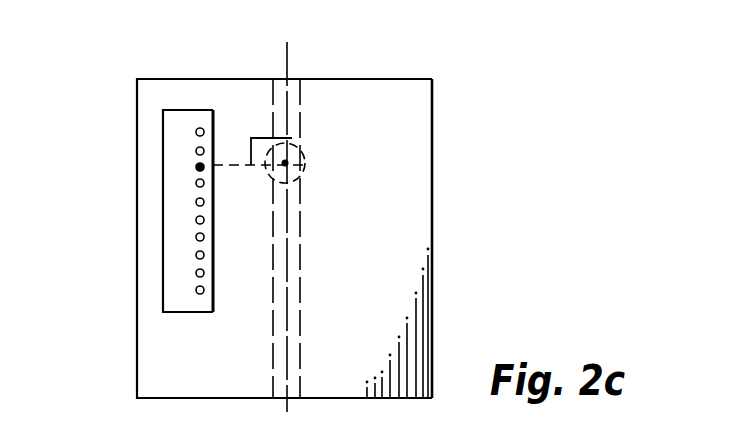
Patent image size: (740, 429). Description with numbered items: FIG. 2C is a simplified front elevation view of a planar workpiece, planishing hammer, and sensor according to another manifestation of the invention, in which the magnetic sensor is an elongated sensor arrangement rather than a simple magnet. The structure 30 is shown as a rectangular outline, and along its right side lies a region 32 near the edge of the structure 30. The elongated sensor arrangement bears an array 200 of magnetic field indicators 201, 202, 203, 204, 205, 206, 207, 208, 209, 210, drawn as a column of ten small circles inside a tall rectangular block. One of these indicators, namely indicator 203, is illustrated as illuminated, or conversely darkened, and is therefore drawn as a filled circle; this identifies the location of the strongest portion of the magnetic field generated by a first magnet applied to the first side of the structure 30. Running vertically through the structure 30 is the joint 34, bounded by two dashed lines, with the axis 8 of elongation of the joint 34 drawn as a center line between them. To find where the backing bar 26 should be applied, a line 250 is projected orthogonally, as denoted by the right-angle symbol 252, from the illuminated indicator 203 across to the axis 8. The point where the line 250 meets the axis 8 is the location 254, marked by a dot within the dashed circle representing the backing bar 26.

The axis of elongation 8 is at (289, 56).
The backing bar 26 is at (305, 163).
The structure 30 is at (434, 136).
The surface 32 is at (417, 181).
The joint 34 is at (301, 111).
The array of magnetic field indicators 200 is at (183, 320).
The magnetic field indicator 201 is at (196, 132).
The magnetic field indicator 202 is at (196, 151).
The magnetic field indicator 203 is at (197, 167).
The magnetic field indicator 204 is at (196, 184).
The magnetic field indicator 205 is at (204, 202).
The magnetic field indicator 206 is at (196, 221).
The magnetic field indicator 207 is at (204, 237).
The magnetic field indicator 208 is at (196, 256).
The magnetic field indicator 209 is at (204, 273).
The magnetic field indicator 210 is at (200, 294).
The line 250 is at (235, 166).
The orthogonality symbol 252 is at (251, 136).
The location 254 is at (289, 171).